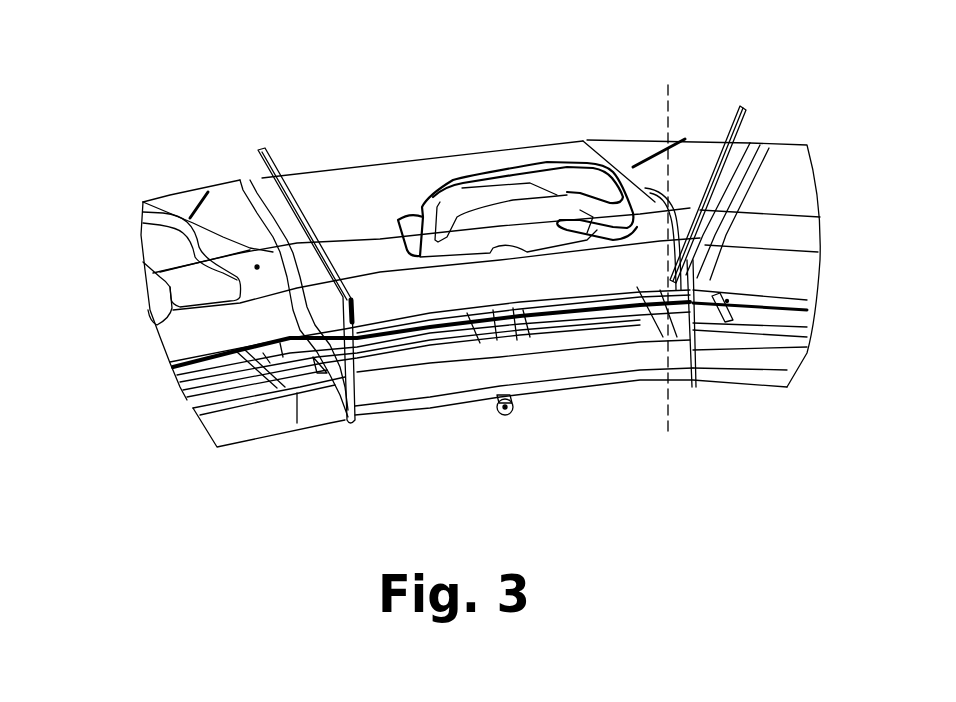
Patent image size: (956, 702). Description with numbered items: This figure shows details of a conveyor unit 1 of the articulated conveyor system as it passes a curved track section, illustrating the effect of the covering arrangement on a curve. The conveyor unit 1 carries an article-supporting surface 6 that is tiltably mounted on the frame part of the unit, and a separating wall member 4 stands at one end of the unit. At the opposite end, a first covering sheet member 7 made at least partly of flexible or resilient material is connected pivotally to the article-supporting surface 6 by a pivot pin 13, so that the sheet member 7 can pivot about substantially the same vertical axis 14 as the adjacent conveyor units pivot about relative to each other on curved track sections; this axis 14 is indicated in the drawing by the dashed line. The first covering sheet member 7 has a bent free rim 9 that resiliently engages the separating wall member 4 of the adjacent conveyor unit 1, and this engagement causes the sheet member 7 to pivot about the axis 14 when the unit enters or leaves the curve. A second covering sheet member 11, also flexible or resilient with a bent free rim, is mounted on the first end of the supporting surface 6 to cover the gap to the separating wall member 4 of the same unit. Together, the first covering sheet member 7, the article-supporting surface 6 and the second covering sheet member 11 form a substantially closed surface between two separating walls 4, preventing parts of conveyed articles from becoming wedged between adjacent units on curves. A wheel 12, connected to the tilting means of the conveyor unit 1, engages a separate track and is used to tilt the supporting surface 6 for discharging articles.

The conveyor unit 1 is at (485, 120).
The separating wall member 4 is at (255, 160).
The article-supporting surface 6 is at (573, 283).
The first covering sheet member 7 is at (628, 150).
The bent free rim 9 is at (697, 287).
The second covering sheet member 11 is at (370, 315).
The wheel 12 is at (507, 423).
The pivot pin 13 is at (680, 235).
The vertical axis 14 is at (660, 224).